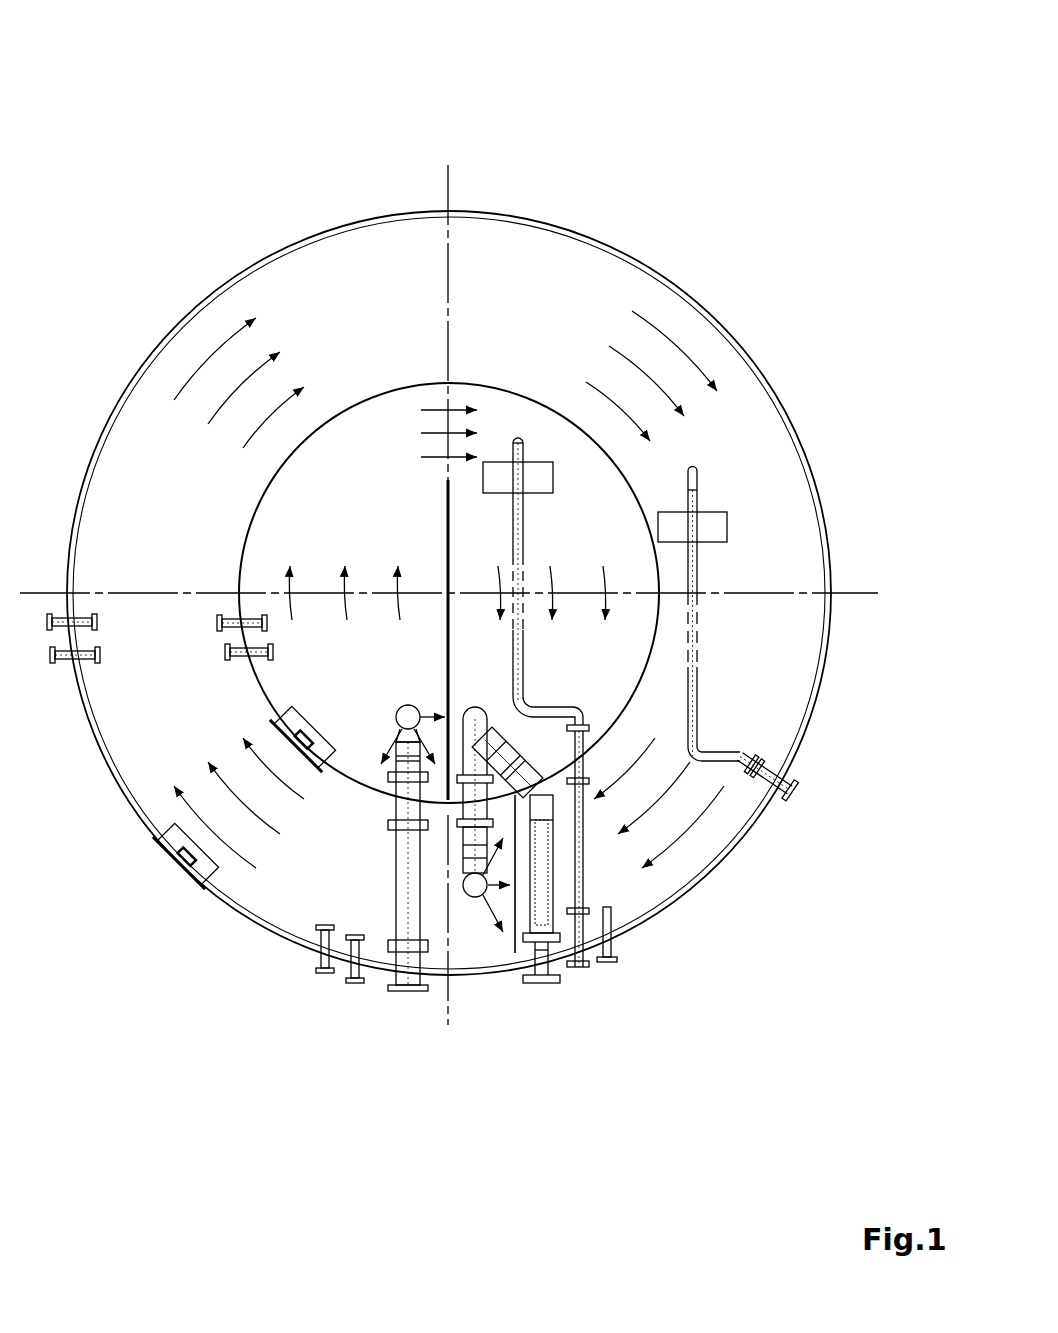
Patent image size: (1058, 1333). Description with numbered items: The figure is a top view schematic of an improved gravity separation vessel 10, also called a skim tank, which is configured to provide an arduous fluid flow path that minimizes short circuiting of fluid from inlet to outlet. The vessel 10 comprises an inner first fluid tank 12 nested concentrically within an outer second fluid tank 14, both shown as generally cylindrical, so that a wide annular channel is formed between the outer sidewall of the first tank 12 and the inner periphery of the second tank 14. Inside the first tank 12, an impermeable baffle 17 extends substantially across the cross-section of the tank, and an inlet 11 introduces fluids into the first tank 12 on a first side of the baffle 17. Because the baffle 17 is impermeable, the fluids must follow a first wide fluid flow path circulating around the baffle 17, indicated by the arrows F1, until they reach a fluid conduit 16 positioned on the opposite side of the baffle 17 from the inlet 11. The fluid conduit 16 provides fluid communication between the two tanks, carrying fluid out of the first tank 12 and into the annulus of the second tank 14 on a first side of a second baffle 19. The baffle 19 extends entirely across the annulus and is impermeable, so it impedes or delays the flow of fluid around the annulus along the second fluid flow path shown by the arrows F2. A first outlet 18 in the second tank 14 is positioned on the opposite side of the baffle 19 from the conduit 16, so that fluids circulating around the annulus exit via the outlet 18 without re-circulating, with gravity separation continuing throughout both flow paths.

The gravity separation vessel 10 is at (752, 88).
The inlet 11 is at (408, 990).
The first fluid tank 12 is at (480, 380).
The second fluid tank 14 is at (628, 258).
The fluid conduit 16 is at (486, 716).
The baffle 17 is at (448, 513).
The first outlet 18 is at (544, 983).
The baffle 19 is at (515, 952).
The first fluid flow path F1 is at (458, 460).
The second fluid flow path F2 is at (207, 352).